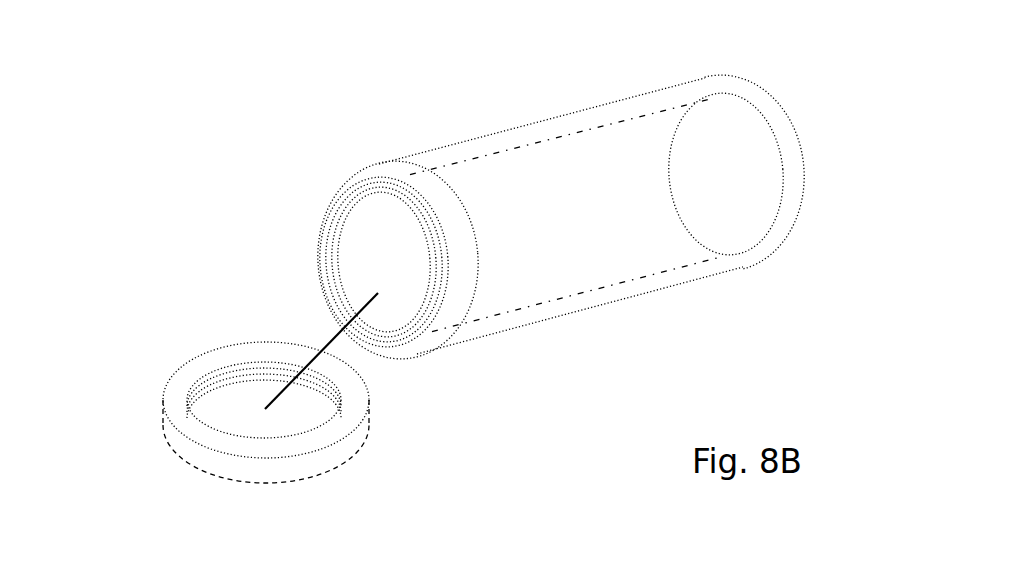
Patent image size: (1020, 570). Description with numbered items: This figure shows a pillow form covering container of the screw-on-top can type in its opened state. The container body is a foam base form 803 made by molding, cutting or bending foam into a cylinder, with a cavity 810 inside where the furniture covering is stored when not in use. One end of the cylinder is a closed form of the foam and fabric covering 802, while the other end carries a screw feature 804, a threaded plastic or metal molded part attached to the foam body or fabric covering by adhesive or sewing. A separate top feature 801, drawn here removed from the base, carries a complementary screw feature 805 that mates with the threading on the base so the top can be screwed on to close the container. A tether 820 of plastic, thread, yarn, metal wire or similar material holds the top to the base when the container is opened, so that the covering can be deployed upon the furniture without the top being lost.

The top feature 801 is at (315, 478).
The closed form of the foam and fabric covering 802 is at (568, 317).
The foam base form 803 is at (668, 278).
The screw feature 804 is at (446, 320).
The complementary screw feature 805 is at (200, 393).
The cavity 810 is at (327, 322).
The tether 820 is at (173, 241).